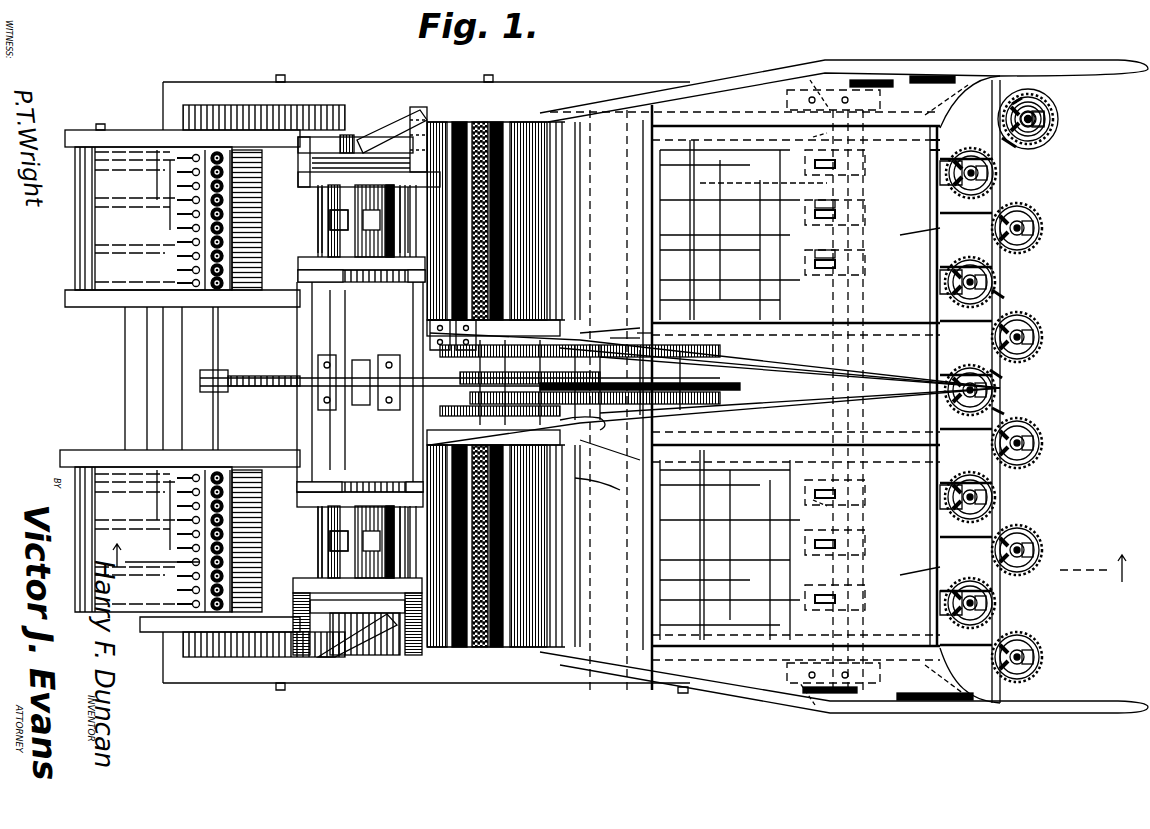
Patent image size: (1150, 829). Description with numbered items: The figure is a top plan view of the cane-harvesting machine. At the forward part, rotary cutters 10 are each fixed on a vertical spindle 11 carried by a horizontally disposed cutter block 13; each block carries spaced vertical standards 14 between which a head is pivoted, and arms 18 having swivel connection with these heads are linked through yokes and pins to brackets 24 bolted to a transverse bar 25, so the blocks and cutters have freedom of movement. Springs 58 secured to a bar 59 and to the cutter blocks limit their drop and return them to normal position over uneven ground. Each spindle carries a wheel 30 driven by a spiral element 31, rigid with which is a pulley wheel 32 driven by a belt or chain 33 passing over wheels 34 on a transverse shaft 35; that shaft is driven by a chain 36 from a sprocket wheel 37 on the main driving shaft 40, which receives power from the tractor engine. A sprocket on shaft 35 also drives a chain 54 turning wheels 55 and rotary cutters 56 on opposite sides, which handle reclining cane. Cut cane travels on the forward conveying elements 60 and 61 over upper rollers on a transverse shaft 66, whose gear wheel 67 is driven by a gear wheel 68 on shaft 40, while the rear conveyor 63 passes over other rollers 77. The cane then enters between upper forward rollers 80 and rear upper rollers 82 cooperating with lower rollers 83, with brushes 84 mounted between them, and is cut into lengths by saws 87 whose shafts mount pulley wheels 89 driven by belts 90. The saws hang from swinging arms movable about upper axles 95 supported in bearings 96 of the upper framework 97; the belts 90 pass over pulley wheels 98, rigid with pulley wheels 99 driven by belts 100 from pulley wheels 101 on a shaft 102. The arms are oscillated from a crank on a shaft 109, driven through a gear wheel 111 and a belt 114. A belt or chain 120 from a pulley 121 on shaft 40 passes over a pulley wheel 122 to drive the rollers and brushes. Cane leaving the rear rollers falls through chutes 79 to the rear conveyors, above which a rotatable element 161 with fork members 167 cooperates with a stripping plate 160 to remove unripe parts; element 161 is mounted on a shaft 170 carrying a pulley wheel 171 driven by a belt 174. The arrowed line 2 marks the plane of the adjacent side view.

The section line 2 is at (619, 564).
The cutter 10 is at (1080, 140).
The vertical shaft or spindle 11 is at (1046, 120).
The cutter block 13 is at (1030, 97).
The vertical standard 14 is at (1040, 107).
The arm 18 is at (940, 237).
The bracket 24 is at (880, 183).
The transverse bar 25 is at (920, 237).
The wheel 30 is at (1042, 130).
The spiral element 31 is at (1058, 107).
The pulley wheel 32 is at (1042, 145).
The belt or chain 33 is at (900, 528).
The wheel 34 is at (813, 137).
The transverse shaft 35 is at (830, 80).
The chain 36 is at (693, 373).
The sprocket wheel 37 is at (637, 333).
The main driving shaft 40 is at (613, 337).
The chain or belt 54 is at (885, 82).
The wheel 55 is at (960, 78).
The rotary cutter 56 is at (940, 77).
The spring 58 is at (1007, 293).
The bar 59 is at (1000, 410).
The forward conveying element 60 is at (730, 236).
The forward conveying element 61 is at (726, 516).
The rear conveyor 63 is at (90, 267).
The transverse shaft 66 is at (673, 352).
The gear wheel 67 is at (205, 105).
The gear wheel 68 is at (580, 333).
The roller 77 is at (112, 130).
The chute 79 is at (418, 110).
The upper forward roller 80 is at (556, 122).
The rear upper roller 82 is at (437, 122).
The lower roller 83 is at (930, 147).
The brush 84 is at (518, 122).
The saw or cutter 87 is at (345, 148).
The pulley wheel 89 is at (360, 135).
The belt 90 is at (378, 270).
The upper axle 95 is at (330, 218).
The bearing 96 is at (300, 178).
The upper framework 97 is at (320, 180).
The pulley wheel 98 is at (402, 270).
The pulley wheel 99 is at (318, 207).
The belt 100 is at (335, 345).
The pulley wheel 101 is at (336, 400).
The shaft 102 is at (365, 405).
The shaft 109 is at (430, 360).
The gear wheel 111 is at (493, 382).
The belt 114 is at (430, 330).
The belt or chain 120 is at (580, 440).
The pulley 121 is at (630, 417).
The pulley wheel 122 is at (580, 483).
The stripping plate 160 is at (248, 292).
The rotatable element 161 is at (210, 290).
The pins 167 is at (177, 222).
The shaft 170 is at (213, 355).
The pulley wheel 171 is at (206, 392).
The belt 174 is at (262, 376).